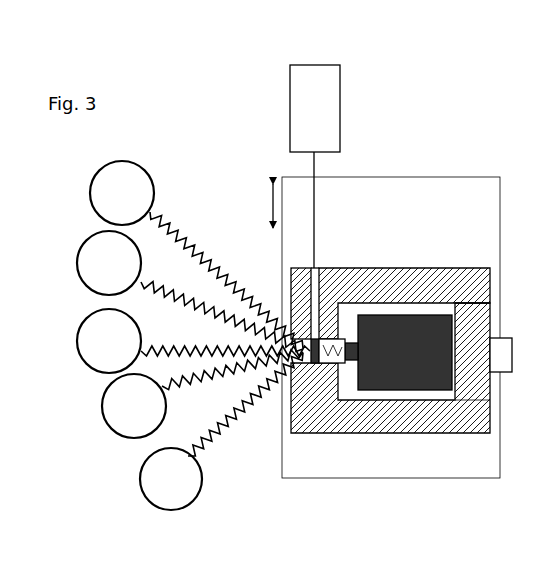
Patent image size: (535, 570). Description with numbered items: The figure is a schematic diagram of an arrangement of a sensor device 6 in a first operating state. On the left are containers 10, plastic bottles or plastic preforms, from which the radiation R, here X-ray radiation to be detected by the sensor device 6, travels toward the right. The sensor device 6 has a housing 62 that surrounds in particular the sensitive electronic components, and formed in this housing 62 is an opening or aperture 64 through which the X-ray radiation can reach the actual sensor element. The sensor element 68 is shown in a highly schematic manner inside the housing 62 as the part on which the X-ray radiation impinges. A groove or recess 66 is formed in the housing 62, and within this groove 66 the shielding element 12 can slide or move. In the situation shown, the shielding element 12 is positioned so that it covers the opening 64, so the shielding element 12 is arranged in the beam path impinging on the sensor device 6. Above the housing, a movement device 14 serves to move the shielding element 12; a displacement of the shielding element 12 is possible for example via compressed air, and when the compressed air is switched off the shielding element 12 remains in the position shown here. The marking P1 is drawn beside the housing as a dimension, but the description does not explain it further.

The sensor device 6 is at (398, 320).
The containers 10 is at (123, 175).
The shielding element 12 is at (313, 358).
The movement device 14 is at (315, 166).
The housing 62 is at (380, 276).
The opening 64 is at (328, 358).
The groove 66 is at (318, 273).
The sensor element 68 is at (350, 368).
The radiation R is at (187, 240).
The displacement P1 is at (255, 206).